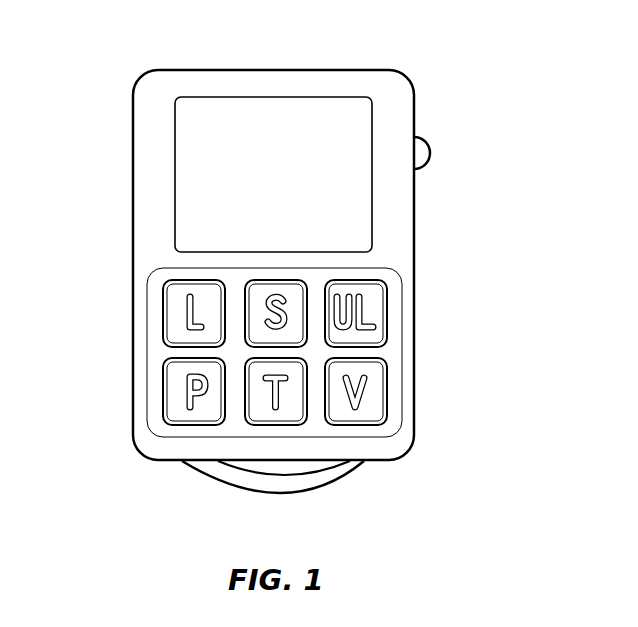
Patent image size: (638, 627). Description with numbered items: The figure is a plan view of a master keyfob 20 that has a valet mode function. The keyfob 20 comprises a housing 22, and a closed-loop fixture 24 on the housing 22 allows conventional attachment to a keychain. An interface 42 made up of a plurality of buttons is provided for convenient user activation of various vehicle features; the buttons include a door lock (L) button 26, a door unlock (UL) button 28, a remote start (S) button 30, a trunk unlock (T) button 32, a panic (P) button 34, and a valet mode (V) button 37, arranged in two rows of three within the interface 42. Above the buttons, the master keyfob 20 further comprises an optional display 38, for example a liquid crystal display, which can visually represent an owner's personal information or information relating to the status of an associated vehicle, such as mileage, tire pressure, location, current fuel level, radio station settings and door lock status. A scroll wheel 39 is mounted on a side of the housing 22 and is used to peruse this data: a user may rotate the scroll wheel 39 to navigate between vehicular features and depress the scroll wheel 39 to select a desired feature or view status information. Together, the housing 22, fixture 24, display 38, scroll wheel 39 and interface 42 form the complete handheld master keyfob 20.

The master keyfob 20 is at (447, 30).
The housing 22 is at (417, 195).
The closed-loop fixture 24 is at (222, 482).
The door lock (L) button 26 is at (162, 328).
The door unlock (UL) button 28 is at (387, 328).
The remote start (S) button 30 is at (244, 283).
The trunk unlock (T) button 32 is at (279, 426).
The panic (P) button 34 is at (162, 403).
The valet mode (V) button 37 is at (387, 403).
The display 38 is at (217, 96).
The scroll wheel 39 is at (431, 150).
The interface 42 is at (403, 358).